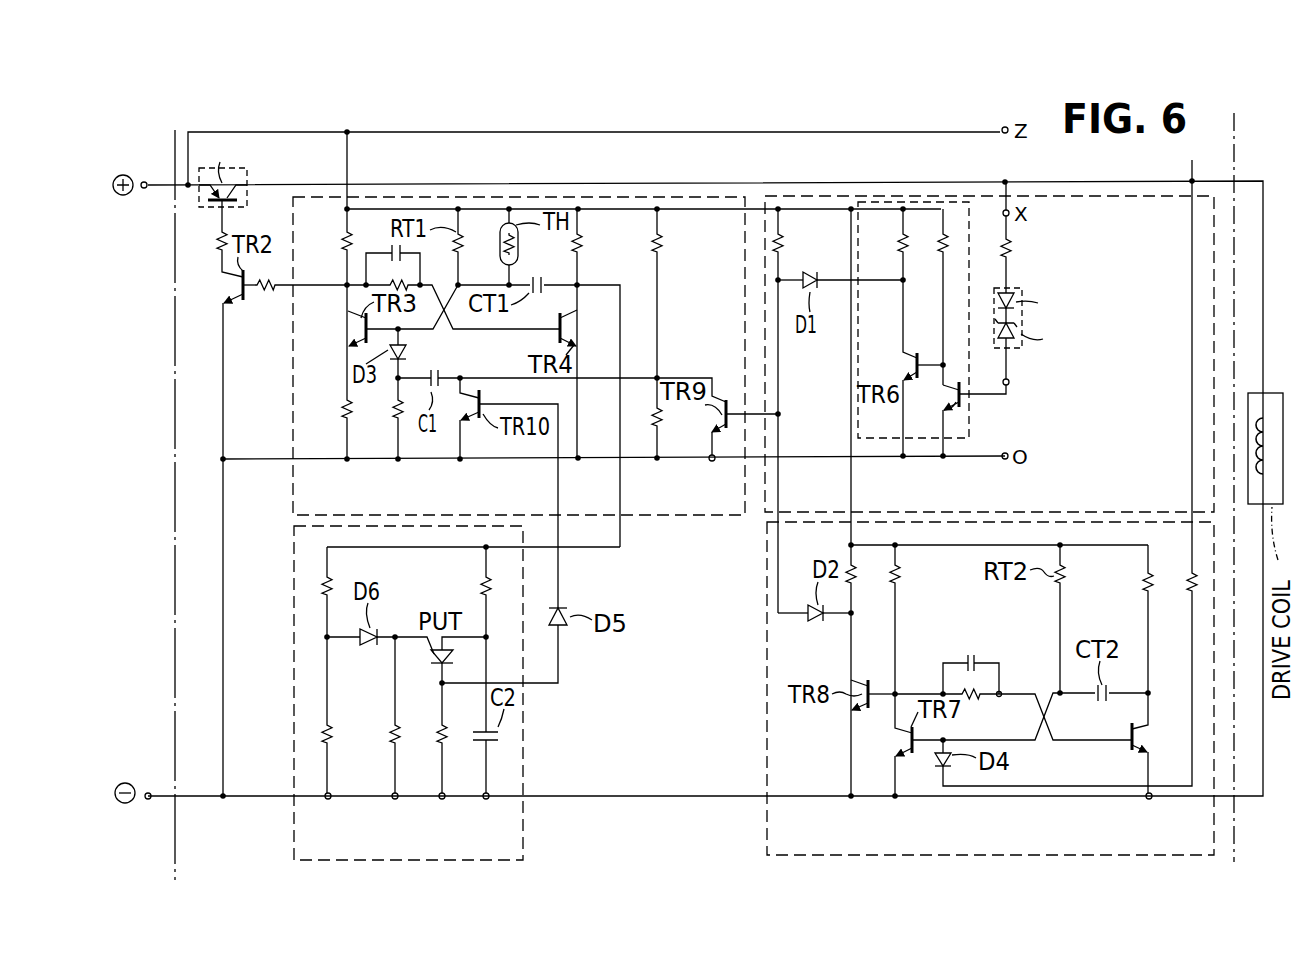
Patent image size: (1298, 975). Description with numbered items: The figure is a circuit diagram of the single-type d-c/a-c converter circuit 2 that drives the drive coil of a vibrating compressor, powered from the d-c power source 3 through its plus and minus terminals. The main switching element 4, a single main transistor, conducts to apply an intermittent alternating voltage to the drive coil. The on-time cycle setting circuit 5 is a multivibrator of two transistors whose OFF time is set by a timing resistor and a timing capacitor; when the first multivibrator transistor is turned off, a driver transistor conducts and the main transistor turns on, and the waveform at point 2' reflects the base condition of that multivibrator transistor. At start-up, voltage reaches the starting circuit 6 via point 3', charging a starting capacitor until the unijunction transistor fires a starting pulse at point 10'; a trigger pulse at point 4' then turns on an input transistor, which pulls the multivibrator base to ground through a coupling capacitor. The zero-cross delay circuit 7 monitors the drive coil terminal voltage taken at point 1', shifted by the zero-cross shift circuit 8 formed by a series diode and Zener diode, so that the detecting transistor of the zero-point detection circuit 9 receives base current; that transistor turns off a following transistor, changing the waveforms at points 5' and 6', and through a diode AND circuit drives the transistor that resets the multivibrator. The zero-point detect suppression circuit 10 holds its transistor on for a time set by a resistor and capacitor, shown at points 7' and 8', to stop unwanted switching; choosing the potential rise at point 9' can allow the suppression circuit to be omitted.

The drive coil terminal point 1' is at (1193, 158).
The d-c/a-c converter circuit 2 is at (1258, 487).
The d-c power source 3 is at (132, 489).
The main switching element 4 is at (389, 168).
The on-time cycle setting circuit 5 is at (497, 356).
The starting circuit 6 is at (384, 693).
The zero-cross delay circuit 7 is at (1014, 354).
The zero-cross shift circuit 8 is at (1079, 306).
The zero-point detection circuit 9 is at (1019, 413).
The zero-point detect suppression circuit 10 is at (962, 688).
The circuit point 2' is at (325, 307).
The circuit point 3' is at (596, 267).
The circuit point 4' is at (423, 343).
The circuit point 5' is at (930, 339).
The circuit point 6' is at (885, 306).
The circuit point 7' is at (909, 666).
The circuit point 8' is at (830, 635).
The circuit point 9' is at (679, 355).
The circuit point 10' is at (421, 699).